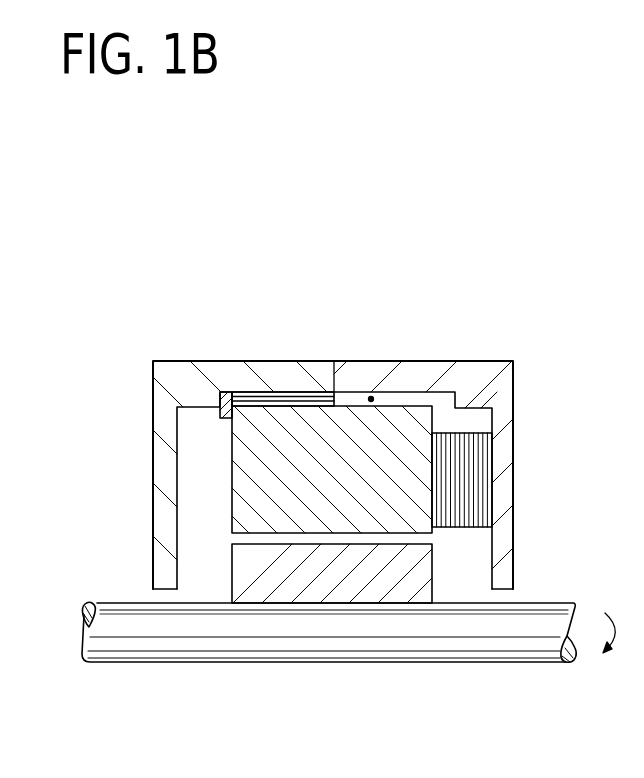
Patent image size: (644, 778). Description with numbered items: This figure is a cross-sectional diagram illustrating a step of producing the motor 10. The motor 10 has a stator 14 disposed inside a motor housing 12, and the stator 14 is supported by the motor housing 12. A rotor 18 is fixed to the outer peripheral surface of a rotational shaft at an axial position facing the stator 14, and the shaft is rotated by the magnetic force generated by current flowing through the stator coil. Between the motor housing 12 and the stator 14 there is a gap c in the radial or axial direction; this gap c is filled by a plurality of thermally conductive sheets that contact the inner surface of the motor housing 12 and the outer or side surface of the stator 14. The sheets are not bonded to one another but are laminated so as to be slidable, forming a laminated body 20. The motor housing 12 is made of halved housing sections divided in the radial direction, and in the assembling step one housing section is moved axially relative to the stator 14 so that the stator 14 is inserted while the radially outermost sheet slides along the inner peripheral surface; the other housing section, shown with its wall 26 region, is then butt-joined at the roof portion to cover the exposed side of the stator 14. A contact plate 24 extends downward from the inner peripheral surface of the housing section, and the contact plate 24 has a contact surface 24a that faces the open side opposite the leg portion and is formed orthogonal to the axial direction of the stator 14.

The motor 10 is at (403, 214).
The motor housing 12 is at (257, 358).
The stator 14 is at (397, 427).
The rotor 18 is at (425, 570).
The laminated body 20 is at (288, 392).
The contact plate 24 is at (226, 418).
The contact surface 24a is at (233, 406).
The side wall 26 is at (170, 507).
The gap c is at (371, 399).